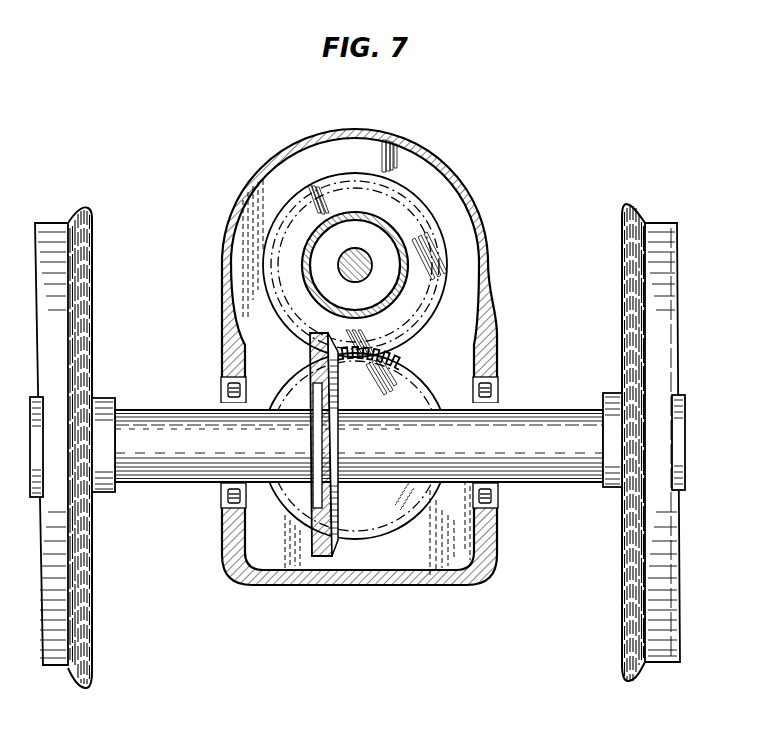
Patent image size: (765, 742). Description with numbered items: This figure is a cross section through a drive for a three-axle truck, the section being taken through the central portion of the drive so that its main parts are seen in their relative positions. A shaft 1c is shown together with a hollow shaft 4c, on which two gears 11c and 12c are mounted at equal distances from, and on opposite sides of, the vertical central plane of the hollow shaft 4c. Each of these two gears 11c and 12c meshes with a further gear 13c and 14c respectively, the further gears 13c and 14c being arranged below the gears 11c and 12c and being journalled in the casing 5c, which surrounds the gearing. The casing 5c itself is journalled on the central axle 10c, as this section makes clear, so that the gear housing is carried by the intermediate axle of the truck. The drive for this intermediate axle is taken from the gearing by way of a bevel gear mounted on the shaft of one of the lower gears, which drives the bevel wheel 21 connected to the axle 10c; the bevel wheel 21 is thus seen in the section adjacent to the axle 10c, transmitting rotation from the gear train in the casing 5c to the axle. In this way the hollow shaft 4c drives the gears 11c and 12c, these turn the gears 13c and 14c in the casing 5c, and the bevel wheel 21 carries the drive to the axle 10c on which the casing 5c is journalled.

The shaft 1c is at (350, 280).
The hollow shaft 4c is at (402, 287).
The casing 5c is at (470, 187).
The axle 10c is at (548, 462).
The gear 11c is at (280, 207).
The gear 12c is at (319, 248).
The gear 13c is at (405, 379).
The gear 14c is at (370, 442).
The bevel wheel 21 is at (338, 550).